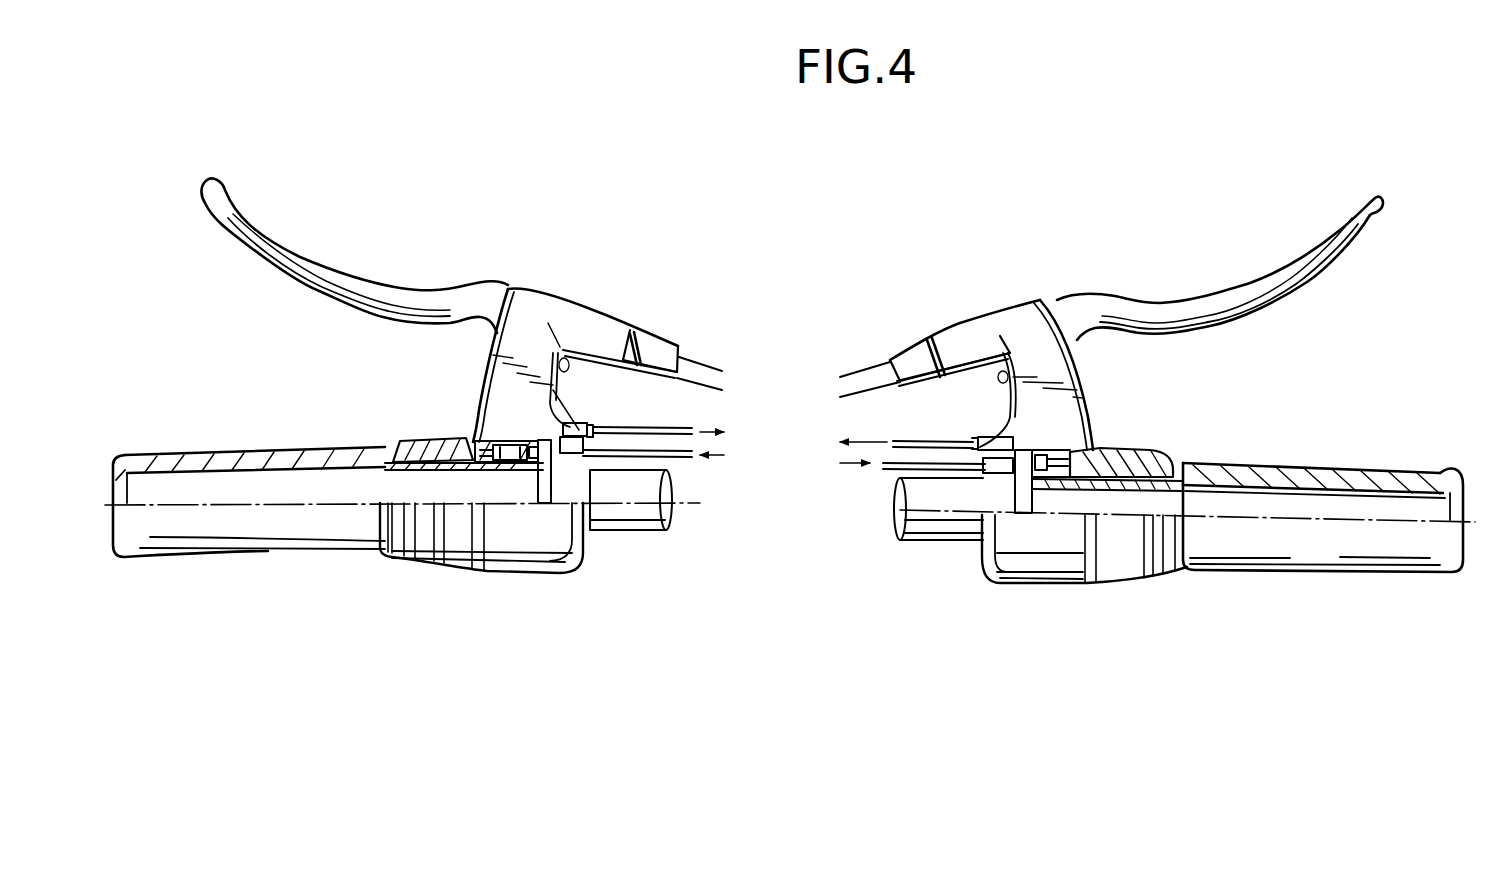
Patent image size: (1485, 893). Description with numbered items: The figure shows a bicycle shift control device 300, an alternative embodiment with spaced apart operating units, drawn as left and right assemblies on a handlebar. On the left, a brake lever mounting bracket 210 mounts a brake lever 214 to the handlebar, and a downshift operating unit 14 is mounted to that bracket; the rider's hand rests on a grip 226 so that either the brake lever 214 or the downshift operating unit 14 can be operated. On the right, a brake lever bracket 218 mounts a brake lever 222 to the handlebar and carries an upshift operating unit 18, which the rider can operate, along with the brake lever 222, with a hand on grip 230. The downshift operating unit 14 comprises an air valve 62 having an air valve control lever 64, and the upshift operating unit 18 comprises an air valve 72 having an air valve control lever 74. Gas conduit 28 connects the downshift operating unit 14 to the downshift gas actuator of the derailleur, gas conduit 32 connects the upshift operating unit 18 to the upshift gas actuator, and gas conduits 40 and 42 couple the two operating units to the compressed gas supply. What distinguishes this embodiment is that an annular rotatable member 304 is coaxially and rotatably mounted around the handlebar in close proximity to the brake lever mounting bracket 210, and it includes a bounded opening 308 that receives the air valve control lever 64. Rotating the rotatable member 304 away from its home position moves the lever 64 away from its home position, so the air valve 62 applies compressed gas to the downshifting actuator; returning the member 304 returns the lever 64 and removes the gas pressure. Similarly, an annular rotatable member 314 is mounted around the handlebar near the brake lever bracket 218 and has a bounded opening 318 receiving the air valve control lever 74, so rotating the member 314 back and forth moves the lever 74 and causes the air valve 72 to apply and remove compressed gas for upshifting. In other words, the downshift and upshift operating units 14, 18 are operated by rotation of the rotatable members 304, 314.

The bicycle shift control device 300 is at (791, 260).
The brake lever 214 is at (353, 277).
The brake lever mounting bracket 210 is at (560, 300).
The brake lever 222 is at (1260, 280).
The brake lever bracket 218 is at (1020, 312).
The grip 226 is at (252, 453).
The grip 230 is at (1350, 470).
The annular rotatable member 304 is at (413, 440).
The bounded opening 308 is at (477, 440).
The annular rotatable member 314 is at (1160, 460).
The bounded opening 318 is at (1092, 456).
The air valve control lever 64 is at (508, 445).
The air valve control lever 74 is at (1070, 452).
The downshift operating unit 14 is at (553, 432).
The upshift operating unit 18 is at (984, 421).
The gas conduit 28 is at (634, 433).
The gas conduit 32 is at (913, 437).
The gas conduit 40 is at (683, 462).
The gas conduit 42 is at (897, 470).
The air valve 62 is at (568, 463).
The air valve 72 is at (1007, 447).